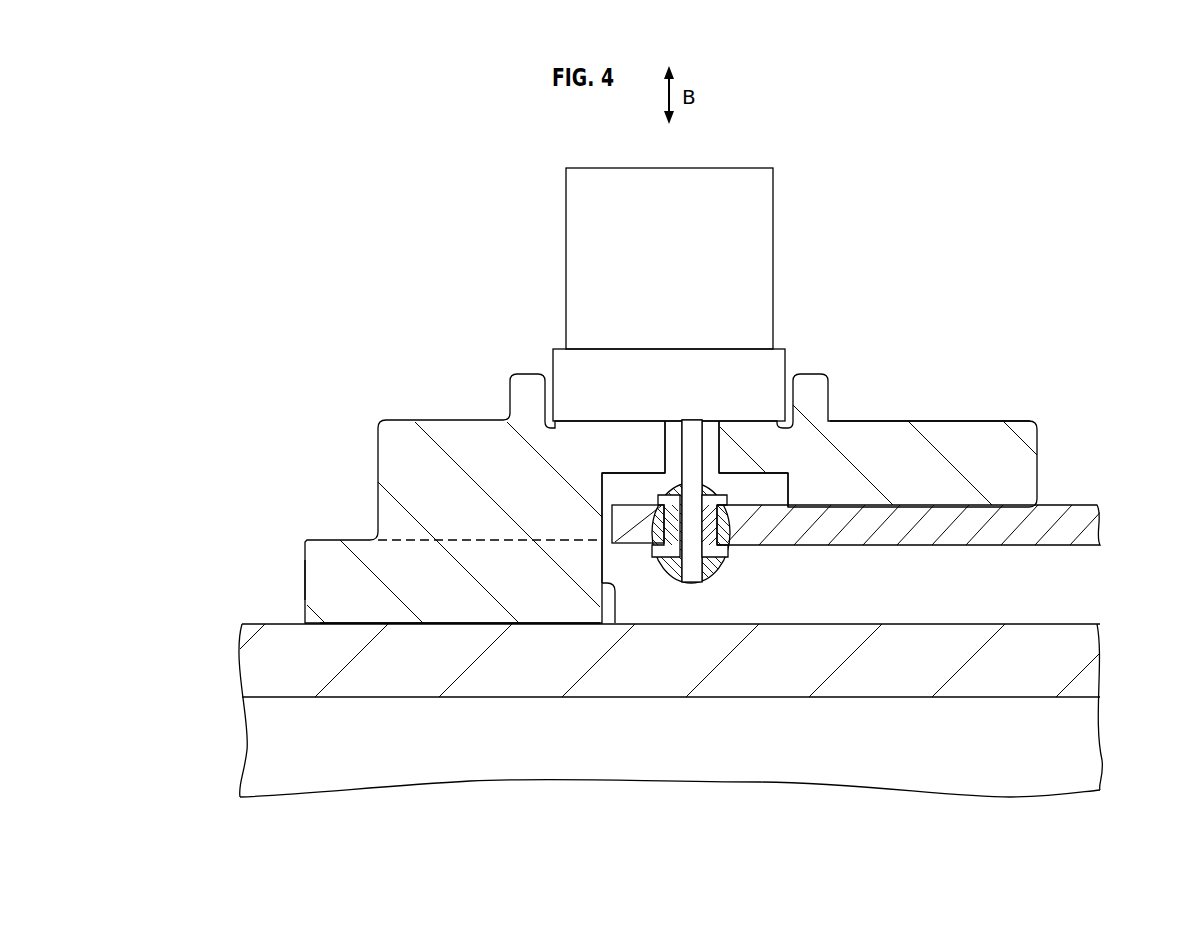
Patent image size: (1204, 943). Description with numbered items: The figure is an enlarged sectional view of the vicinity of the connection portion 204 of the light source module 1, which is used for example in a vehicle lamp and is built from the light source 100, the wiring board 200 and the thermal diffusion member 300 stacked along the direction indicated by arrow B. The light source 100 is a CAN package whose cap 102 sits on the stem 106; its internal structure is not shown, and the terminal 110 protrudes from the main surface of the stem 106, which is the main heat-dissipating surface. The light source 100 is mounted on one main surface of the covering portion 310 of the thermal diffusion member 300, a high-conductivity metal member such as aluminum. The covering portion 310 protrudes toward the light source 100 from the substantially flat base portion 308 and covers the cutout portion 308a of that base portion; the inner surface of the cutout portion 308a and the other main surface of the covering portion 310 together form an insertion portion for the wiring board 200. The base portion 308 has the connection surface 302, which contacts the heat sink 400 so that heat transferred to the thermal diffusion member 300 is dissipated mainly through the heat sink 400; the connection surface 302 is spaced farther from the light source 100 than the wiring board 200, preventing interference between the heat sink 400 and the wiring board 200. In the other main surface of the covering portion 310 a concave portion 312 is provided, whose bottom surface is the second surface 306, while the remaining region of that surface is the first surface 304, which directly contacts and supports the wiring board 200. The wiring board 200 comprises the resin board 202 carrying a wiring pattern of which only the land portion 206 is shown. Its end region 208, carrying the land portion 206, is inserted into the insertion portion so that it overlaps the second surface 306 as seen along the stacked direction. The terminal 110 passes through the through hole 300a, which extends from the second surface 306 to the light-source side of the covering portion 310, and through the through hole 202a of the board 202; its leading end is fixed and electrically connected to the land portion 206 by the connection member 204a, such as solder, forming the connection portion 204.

The light source module 1 is at (1023, 181).
The light source 100 is at (777, 165).
The cap 102 is at (775, 219).
The stem 106 is at (786, 366).
The terminal 110 is at (690, 584).
The wiring board 200 is at (1087, 503).
The board 202 is at (1093, 533).
The through hole 202a is at (717, 538).
The connection portion 204 is at (691, 586).
The connection member 204a is at (673, 560).
The land portion 206 is at (613, 473).
The end region 208 is at (632, 498).
The thermal diffusion member 300 is at (382, 418).
The through hole 300a is at (717, 448).
The connection surface 302 is at (340, 625).
The first surface 304 is at (1000, 507).
The second surface 306 is at (661, 495).
The base portion 308 is at (337, 567).
The cutout portion 308a is at (616, 587).
The covering portion 310 is at (402, 474).
The concave portion 312 is at (790, 490).
The heat sink 400 is at (270, 658).